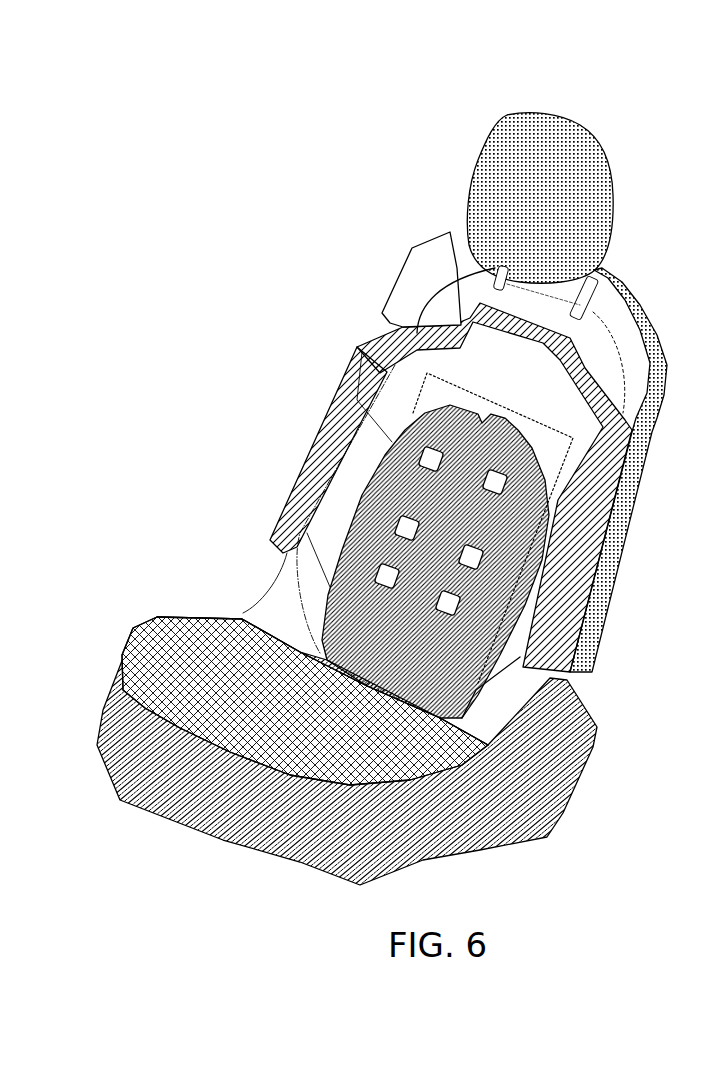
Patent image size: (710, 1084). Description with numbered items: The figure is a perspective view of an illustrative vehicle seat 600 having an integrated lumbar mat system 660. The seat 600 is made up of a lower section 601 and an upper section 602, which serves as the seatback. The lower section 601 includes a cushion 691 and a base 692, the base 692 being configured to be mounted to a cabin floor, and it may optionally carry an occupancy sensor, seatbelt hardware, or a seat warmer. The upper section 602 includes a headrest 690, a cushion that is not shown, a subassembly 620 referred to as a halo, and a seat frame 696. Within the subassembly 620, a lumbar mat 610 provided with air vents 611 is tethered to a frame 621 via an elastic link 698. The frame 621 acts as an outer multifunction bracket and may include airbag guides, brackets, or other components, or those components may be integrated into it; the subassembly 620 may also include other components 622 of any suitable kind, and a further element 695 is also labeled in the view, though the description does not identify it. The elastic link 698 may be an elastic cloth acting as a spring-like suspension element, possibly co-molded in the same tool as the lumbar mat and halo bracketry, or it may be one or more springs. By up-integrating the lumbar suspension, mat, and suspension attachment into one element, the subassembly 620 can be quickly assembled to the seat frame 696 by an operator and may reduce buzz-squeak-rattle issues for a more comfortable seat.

The seat 600 is at (291, 147).
The lower section 601 is at (166, 548).
The upper section 602 is at (380, 110).
The lumbar mat 610 is at (416, 648).
The air vents 611 is at (483, 553).
The subassembly 620 is at (352, 336).
The frame 621 is at (300, 487).
The other components 622 is at (477, 377).
The integrated lumbar mat system 660 is at (530, 422).
The headrest 690 is at (565, 201).
The cushion 691 is at (282, 711).
The base 692 is at (180, 773).
The headrest support panel 695 is at (397, 291).
The frame 696 is at (600, 602).
The elastic link 698 is at (360, 463).